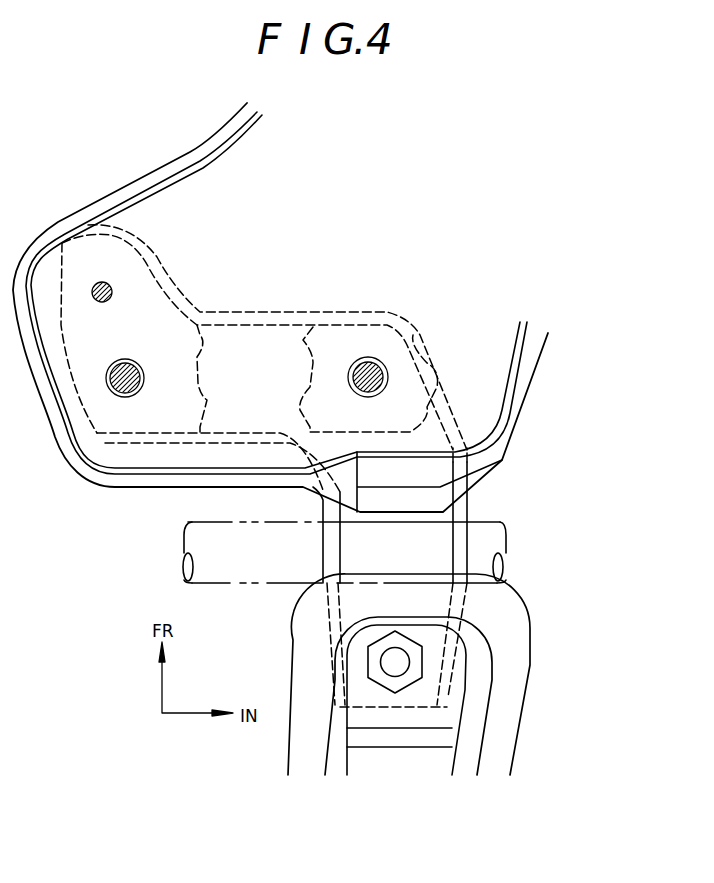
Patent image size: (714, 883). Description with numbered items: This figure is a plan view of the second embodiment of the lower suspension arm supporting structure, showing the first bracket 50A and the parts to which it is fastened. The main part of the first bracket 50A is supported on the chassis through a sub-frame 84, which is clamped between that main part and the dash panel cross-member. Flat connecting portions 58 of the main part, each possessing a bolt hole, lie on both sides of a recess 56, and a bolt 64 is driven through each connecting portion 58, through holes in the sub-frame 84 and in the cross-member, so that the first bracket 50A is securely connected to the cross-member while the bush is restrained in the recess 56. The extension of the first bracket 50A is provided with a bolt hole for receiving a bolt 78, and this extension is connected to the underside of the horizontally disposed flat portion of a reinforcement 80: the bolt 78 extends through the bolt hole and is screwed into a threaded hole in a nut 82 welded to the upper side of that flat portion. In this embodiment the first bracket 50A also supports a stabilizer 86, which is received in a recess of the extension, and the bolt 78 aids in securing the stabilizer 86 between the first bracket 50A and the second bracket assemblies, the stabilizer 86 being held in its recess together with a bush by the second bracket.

The sub-frame 84 is at (146, 175).
The connecting portion 58 is at (163, 298).
The recess 56 is at (305, 356).
The bolt 64 is at (113, 393).
The stabilizer 86 is at (485, 512).
The first bracket 50A is at (322, 552).
The reinforcement 80 is at (518, 726).
The bolt 78 is at (408, 662).
The nut 82 is at (406, 680).